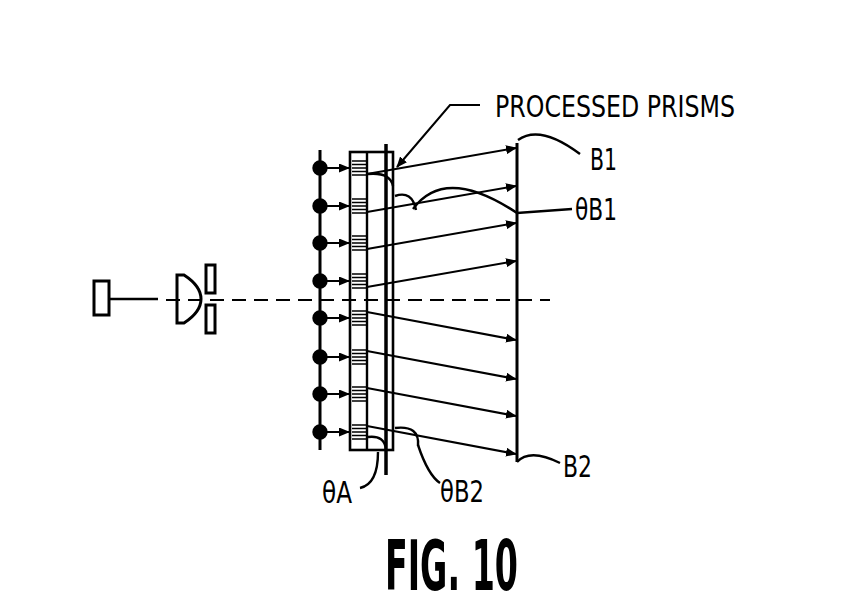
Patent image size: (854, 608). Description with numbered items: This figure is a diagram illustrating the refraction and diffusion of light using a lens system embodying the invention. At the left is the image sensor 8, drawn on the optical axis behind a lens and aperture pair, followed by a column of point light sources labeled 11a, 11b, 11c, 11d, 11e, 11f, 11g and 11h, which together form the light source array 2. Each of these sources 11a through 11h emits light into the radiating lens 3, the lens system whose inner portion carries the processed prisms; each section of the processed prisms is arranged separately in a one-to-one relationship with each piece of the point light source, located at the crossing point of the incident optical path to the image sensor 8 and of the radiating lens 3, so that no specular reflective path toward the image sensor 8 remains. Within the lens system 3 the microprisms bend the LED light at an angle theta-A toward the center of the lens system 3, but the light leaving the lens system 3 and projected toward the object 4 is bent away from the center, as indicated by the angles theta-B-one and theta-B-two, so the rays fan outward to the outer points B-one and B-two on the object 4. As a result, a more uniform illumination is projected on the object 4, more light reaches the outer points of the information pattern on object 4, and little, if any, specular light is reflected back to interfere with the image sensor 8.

The light emitting element array 2 is at (320, 146).
The radiating lens 3 is at (376, 135).
The object 4 is at (517, 80).
The image sensor 8 is at (98, 316).
The light emitting element 11a is at (314, 432).
The light emitting element 11b is at (314, 394).
The light emitting element 11c is at (314, 357).
The light emitting element 11d is at (314, 318).
The light emitting element 11e is at (314, 281).
The light emitting element 11f is at (314, 243).
The light emitting element 11g is at (314, 206).
The light emitting element 11h is at (314, 168).